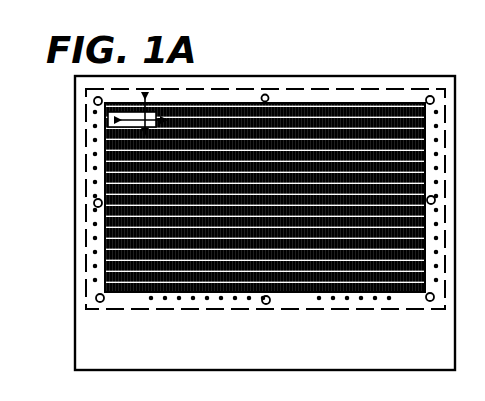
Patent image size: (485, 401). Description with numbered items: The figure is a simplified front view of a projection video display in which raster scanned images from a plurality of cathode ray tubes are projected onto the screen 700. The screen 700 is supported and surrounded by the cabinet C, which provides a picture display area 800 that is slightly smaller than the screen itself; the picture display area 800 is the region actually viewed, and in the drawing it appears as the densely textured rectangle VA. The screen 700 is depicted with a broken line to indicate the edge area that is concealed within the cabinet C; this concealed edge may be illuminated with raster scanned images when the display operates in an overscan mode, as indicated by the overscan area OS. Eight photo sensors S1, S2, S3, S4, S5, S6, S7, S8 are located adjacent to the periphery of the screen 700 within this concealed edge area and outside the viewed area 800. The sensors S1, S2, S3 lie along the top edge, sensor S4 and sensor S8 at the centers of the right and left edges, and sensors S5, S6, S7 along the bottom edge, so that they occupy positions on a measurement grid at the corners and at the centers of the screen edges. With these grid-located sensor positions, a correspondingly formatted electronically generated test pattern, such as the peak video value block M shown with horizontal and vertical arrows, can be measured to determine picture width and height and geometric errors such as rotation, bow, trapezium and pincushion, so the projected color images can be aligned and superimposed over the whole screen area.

The cabinet C is at (83, 327).
The screen 700 is at (78, 146).
The overscan area OS is at (86, 258).
The picture display area 800 is at (80, 248).
The visible display area VA is at (97, 223).
The peak video value block M is at (100, 112).
The photo sensor S1 is at (115, 93).
The photo sensor S2 is at (252, 92).
The photo sensor S3 is at (416, 92).
The photo sensor S4 is at (439, 189).
The photo sensor S5 is at (417, 303).
The photo sensor S6 is at (280, 305).
The photo sensor S7 is at (116, 304).
The photo sensor S8 is at (84, 203).